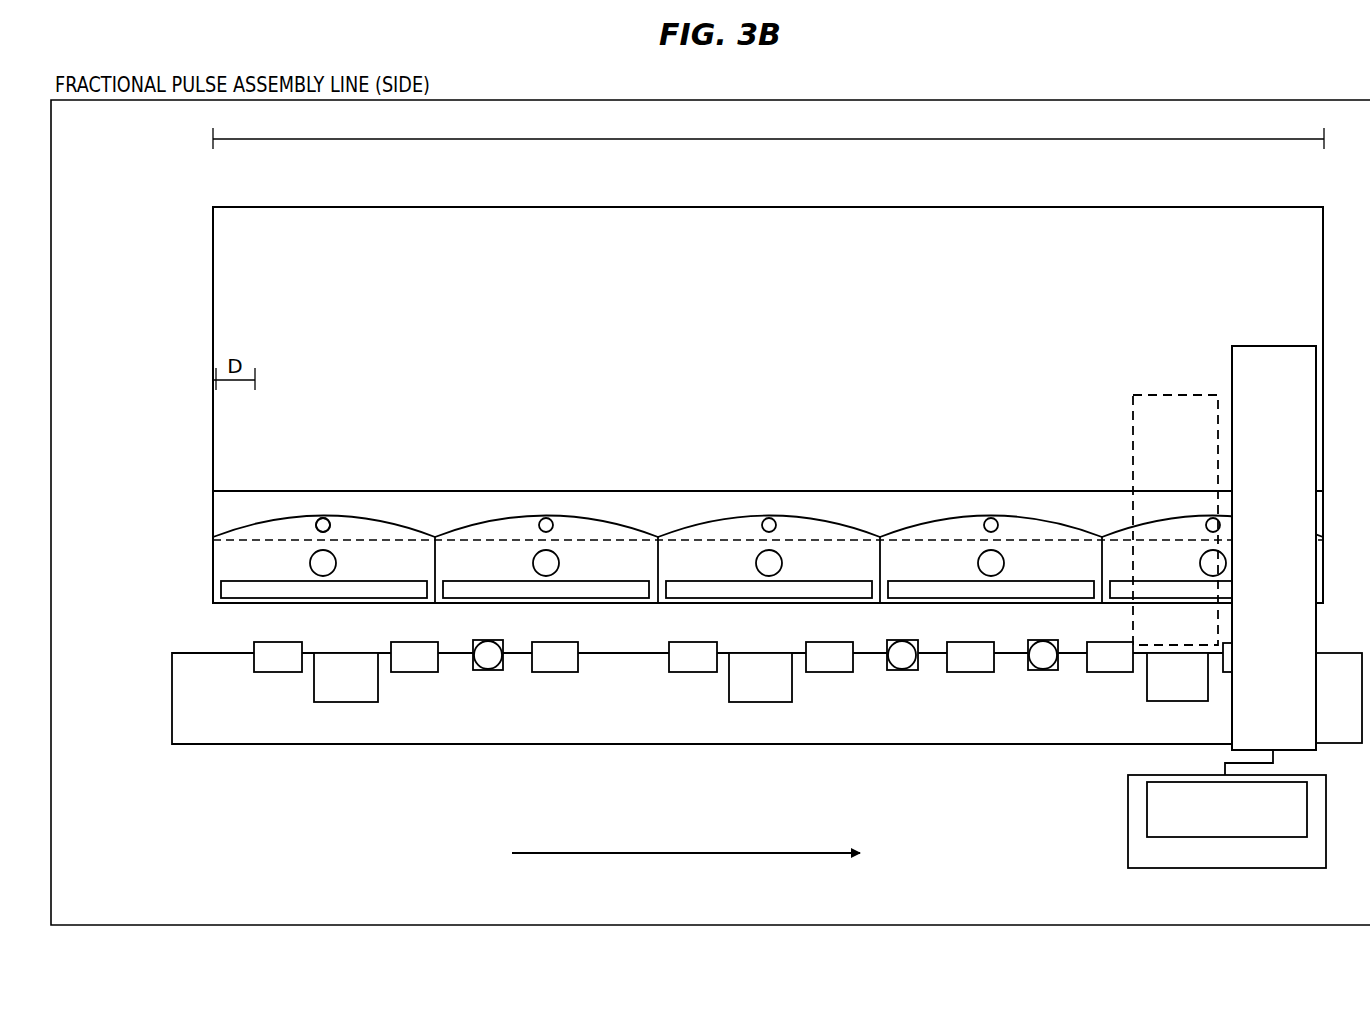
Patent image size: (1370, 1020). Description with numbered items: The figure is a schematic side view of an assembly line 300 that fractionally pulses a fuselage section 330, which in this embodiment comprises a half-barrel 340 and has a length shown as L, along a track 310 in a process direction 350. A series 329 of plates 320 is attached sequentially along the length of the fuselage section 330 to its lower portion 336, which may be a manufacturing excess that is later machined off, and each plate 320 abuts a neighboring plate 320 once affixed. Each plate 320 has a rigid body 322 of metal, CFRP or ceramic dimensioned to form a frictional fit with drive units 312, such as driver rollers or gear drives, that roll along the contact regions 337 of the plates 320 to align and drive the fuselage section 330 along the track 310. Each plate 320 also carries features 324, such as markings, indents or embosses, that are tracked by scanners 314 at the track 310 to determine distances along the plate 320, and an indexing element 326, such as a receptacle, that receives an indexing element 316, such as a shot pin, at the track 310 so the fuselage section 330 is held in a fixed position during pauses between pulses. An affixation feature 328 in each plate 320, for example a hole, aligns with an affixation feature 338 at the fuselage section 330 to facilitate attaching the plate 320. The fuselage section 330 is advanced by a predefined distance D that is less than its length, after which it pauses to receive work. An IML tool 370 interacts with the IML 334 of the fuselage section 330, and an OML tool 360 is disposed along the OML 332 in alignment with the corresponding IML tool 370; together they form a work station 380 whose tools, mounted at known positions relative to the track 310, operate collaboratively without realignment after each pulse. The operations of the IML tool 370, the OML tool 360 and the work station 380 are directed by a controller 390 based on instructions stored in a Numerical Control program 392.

The assembly line 300 is at (818, 915).
The track 310 is at (767, 714).
The drive unit 312 is at (265, 673).
The scanner 314 is at (355, 702).
The indexing element 316 is at (896, 671).
The plate 320 is at (735, 548).
The body 322 is at (384, 530).
The feature 324 is at (235, 581).
The indexing element 326 is at (336, 563).
The affixation feature 328 is at (322, 519).
The series of plates 329 is at (138, 565).
The fuselage section 330 is at (385, 207).
The OML 332 is at (517, 288).
The IML 334 is at (243, 211).
The lower portion 336 is at (207, 492).
The contact region 337 is at (190, 545).
The affixation feature 338 is at (333, 516).
The half-barrel 340 is at (606, 186).
The process direction 350 is at (699, 852).
The OML tool 360 is at (1256, 583).
The IML tool 370 is at (1158, 481).
The work station 380 is at (1227, 834).
The controller 390 is at (1316, 863).
The Numerical Control program 392 is at (1227, 809).